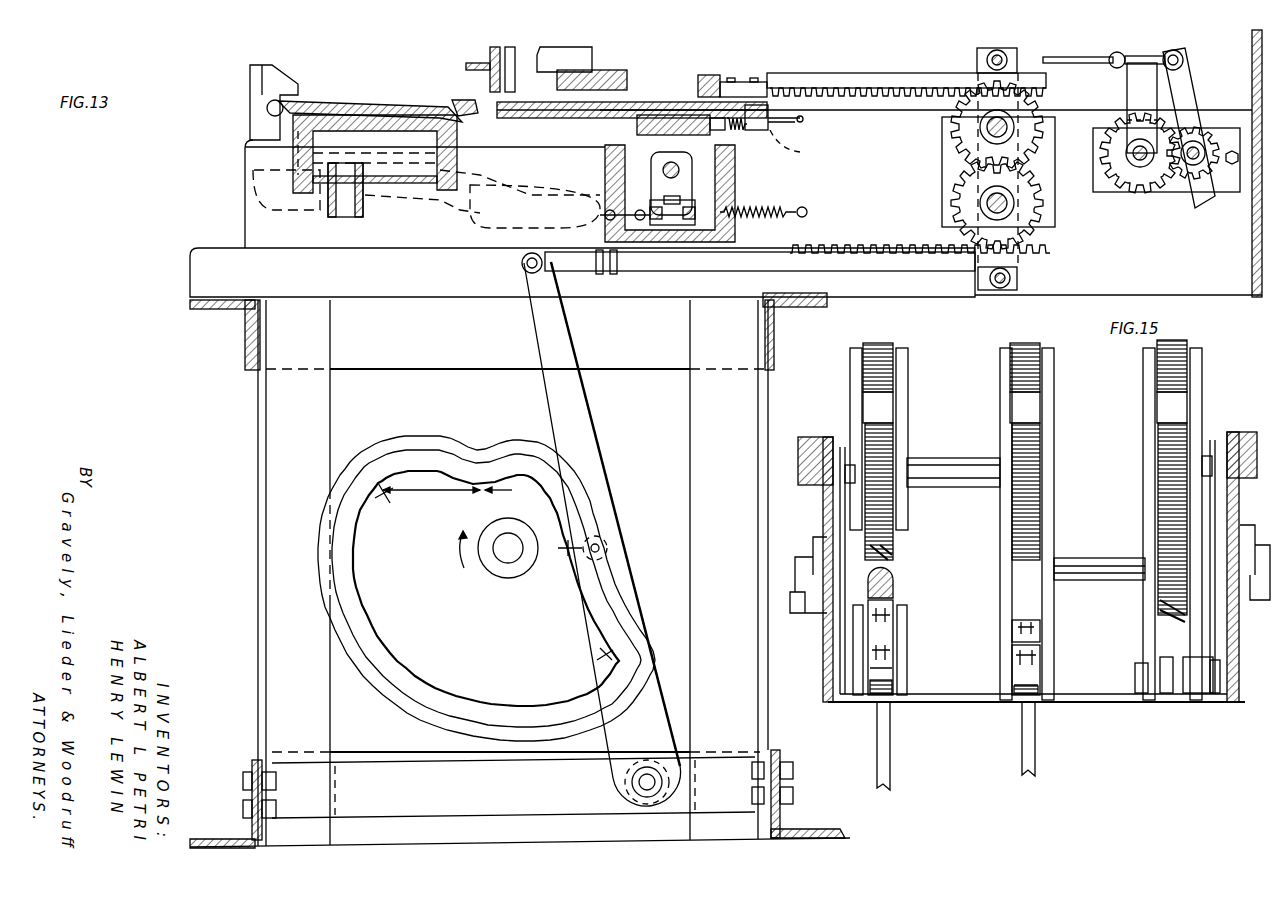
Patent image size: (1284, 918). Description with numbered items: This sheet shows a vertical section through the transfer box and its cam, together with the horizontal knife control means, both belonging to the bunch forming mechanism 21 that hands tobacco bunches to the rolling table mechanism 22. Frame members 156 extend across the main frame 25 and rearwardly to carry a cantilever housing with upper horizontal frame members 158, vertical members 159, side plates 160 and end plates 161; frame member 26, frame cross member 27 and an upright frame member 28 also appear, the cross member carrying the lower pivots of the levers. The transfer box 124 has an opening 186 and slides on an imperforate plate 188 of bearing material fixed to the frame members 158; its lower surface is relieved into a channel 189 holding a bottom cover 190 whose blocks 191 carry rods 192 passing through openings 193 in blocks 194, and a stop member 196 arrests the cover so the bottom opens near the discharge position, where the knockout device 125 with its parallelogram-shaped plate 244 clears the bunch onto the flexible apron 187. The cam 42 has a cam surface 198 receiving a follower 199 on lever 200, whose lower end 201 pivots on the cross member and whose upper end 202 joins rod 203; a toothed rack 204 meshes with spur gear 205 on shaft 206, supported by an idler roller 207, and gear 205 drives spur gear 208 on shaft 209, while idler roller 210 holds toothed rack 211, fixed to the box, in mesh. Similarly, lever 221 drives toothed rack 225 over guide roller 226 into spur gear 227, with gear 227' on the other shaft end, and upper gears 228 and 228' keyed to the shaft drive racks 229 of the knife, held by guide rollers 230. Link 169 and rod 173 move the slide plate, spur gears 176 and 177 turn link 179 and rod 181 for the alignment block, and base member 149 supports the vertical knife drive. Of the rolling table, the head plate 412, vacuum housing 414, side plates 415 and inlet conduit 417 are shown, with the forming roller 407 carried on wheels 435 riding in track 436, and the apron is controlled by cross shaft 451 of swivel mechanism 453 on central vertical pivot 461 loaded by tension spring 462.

In FIG. 13, the bunch forming mechanism 21 is at (812, 70).
In FIG. 13, the rolling table mechanism 22 is at (298, 82).
In FIG. 13, the main frame 25 is at (250, 580).
In FIG. 13, the frame member 26 is at (252, 760).
In FIG. 13, the frame cross member 27 is at (380, 762).
In FIG. 13, the upright post 28 is at (690, 425).
In FIG. 13, the cam 42 is at (387, 570).
In FIG. 13, the transfer box 124 is at (446, 104).
In FIG. 13, the knockout device 125 is at (482, 51).
In FIG. 13, the base member 149 is at (612, 70).
In FIG. 13, the frame member 156 is at (726, 272).
In FIG. 15, the upper horizontal frame member 158 is at (802, 485).
In FIG. 15, the vertical member 159 is at (823, 626).
In FIG. 13, the side plate 160 is at (1175, 266).
In FIG. 15, the side plate 160 is at (823, 680).
In FIG. 13, the end plate 161 is at (1252, 222).
In FIG. 13, the link 169 is at (1188, 82).
In FIG. 13, the rod 173 is at (1088, 58).
In FIG. 13, the spur gear 176 is at (1182, 178).
In FIG. 13, the spur gear 177 is at (1145, 185).
In FIG. 13, the link 179 is at (1128, 97).
In FIG. 13, the rod 181 is at (1052, 56).
In FIG. 13, the opening 186 is at (470, 104).
In FIG. 13, the flexible apron 187 is at (380, 100).
In FIG. 13, the imperforate plate 188 is at (632, 119).
In FIG. 13, the channel 189 is at (395, 154).
In FIG. 13, the bottom cover 190 is at (572, 128).
In FIG. 13, the block 191 is at (718, 128).
In FIG. 13, the rod 192 is at (790, 126).
In FIG. 13, the opening 193 is at (805, 152).
In FIG. 13, the block 194 is at (760, 105).
In FIG. 13, the stop member 196 is at (672, 152).
In FIG. 13, the cam surface 198 is at (383, 487).
In FIG. 13, the follower 199 is at (598, 535).
In FIG. 13, the lever 200 is at (572, 352).
In FIG. 15, the lever 200 is at (1035, 738).
In FIG. 13, the lower end 201 is at (632, 782).
In FIG. 13, the upper end 202 is at (522, 263).
In FIG. 13, the rod 203 is at (600, 273).
In FIG. 13, the toothed rack 204 is at (655, 268).
In FIG. 15, the toothed rack 204 is at (1042, 630).
In FIG. 13, the spur gear 205 is at (960, 212).
In FIG. 15, the spur gear 205 is at (1048, 550).
In FIG. 13, the shaft 206 is at (1012, 200).
In FIG. 15, the shaft 206 is at (925, 578).
In FIG. 13, the idler roller 207 is at (1000, 290).
In FIG. 15, the idler roller 207 is at (1042, 655).
In FIG. 13, the spur gear 208 is at (962, 142).
In FIG. 15, the spur gear 208 is at (1040, 455).
In FIG. 13, the shaft 209 is at (1010, 124).
In FIG. 15, the shaft 209 is at (925, 463).
In FIG. 13, the idler roller 210 is at (985, 48).
In FIG. 15, the idler roller 210 is at (1030, 345).
In FIG. 13, the toothed rack 211 is at (845, 85).
In FIG. 15, the toothed rack 211 is at (1030, 408).
In FIG. 15, the lever 221 is at (890, 757).
In FIG. 15, the toothed rack 225 is at (895, 630).
In FIG. 15, the guide roller 226 is at (895, 700).
In FIG. 15, the spur gear 227 is at (910, 545).
In FIG. 15, the spur gear 227' is at (1148, 639).
In FIG. 15, the upper gear 228 is at (846, 483).
In FIG. 15, the upper gear 228' is at (1201, 508).
In FIG. 15, the rack 229 is at (885, 413).
In FIG. 15, the guide roller 230 is at (878, 343).
In FIG. 13, the parallelogram-shaped plate 244 is at (466, 66).
In FIG. 13, the forming roller 407 is at (267, 108).
In FIG. 13, the head plate 412 is at (350, 110).
In FIG. 13, the vacuum housing 414 is at (445, 184).
In FIG. 13, the side plate 415 is at (422, 212).
In FIG. 13, the inlet conduit 417 is at (350, 217).
In FIG. 13, the wheel 435 is at (300, 214).
In FIG. 13, the track 436 is at (520, 199).
In FIG. 13, the cross shaft 451 is at (709, 75).
In FIG. 13, the swivel mechanism 453 is at (700, 197).
In FIG. 13, the central vertical pivot 461 is at (700, 222).
In FIG. 13, the tension spring 462 is at (790, 207).